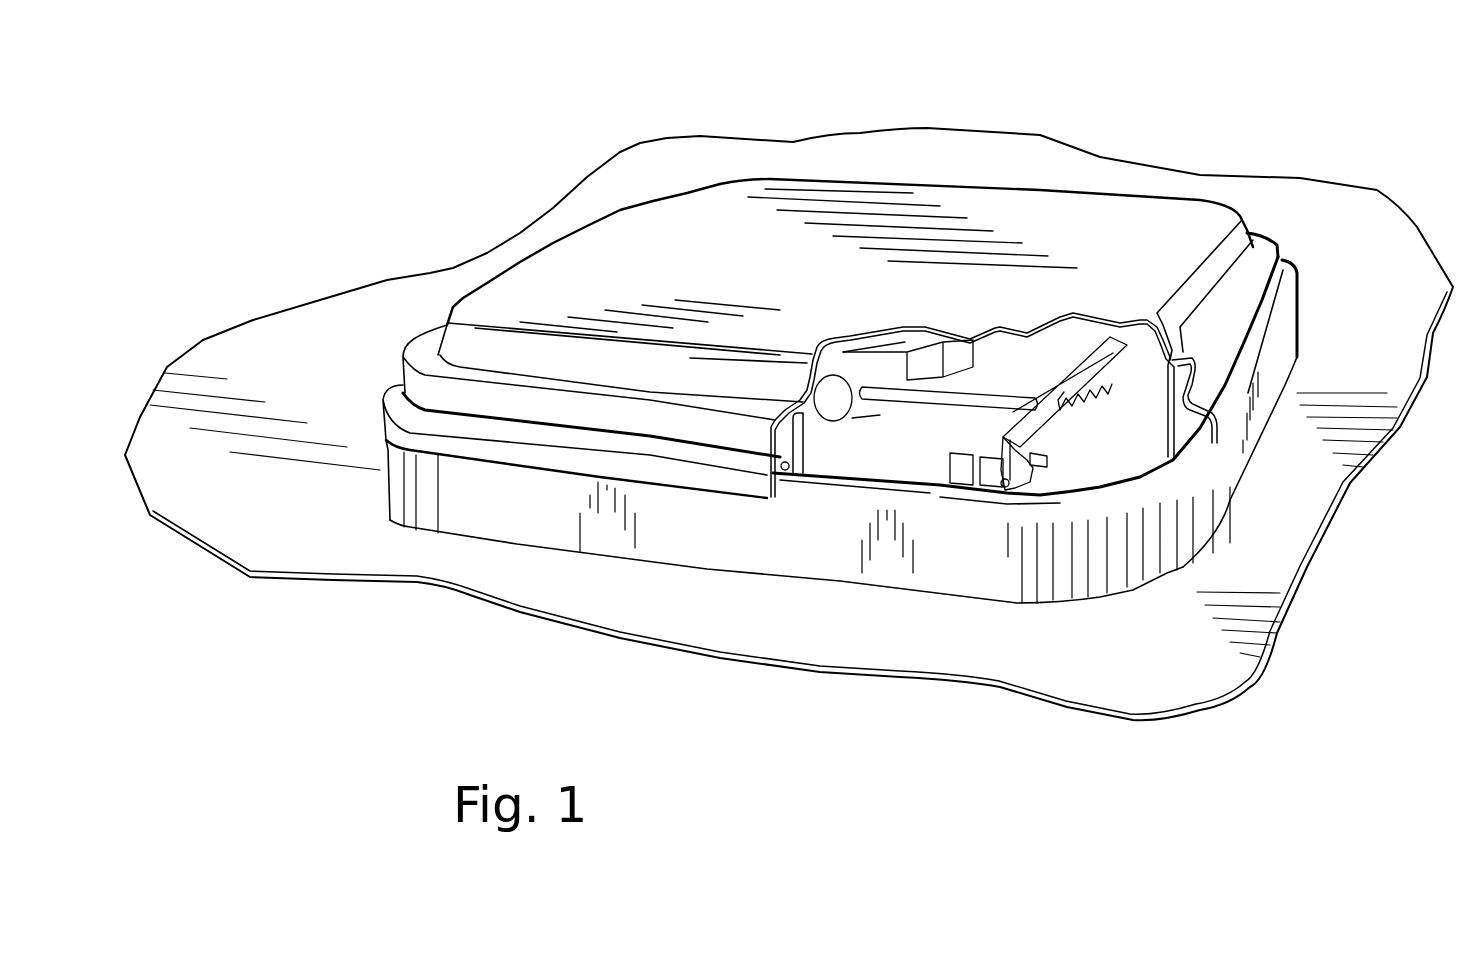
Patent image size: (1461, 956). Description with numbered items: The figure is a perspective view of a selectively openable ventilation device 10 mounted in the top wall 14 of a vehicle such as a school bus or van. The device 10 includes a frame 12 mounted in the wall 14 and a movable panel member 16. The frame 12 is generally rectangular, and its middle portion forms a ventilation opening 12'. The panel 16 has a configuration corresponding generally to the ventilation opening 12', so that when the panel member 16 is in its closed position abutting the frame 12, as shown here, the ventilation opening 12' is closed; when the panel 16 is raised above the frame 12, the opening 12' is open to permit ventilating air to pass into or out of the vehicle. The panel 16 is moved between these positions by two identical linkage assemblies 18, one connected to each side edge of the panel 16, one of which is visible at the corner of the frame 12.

The ventilation device 10 is at (1008, 166).
The frame 12 is at (887, 415).
The ventilation opening 12' is at (1119, 565).
The wall 14 is at (682, 170).
The panel member 16 is at (1165, 228).
The linkage assembly 18 is at (987, 440).